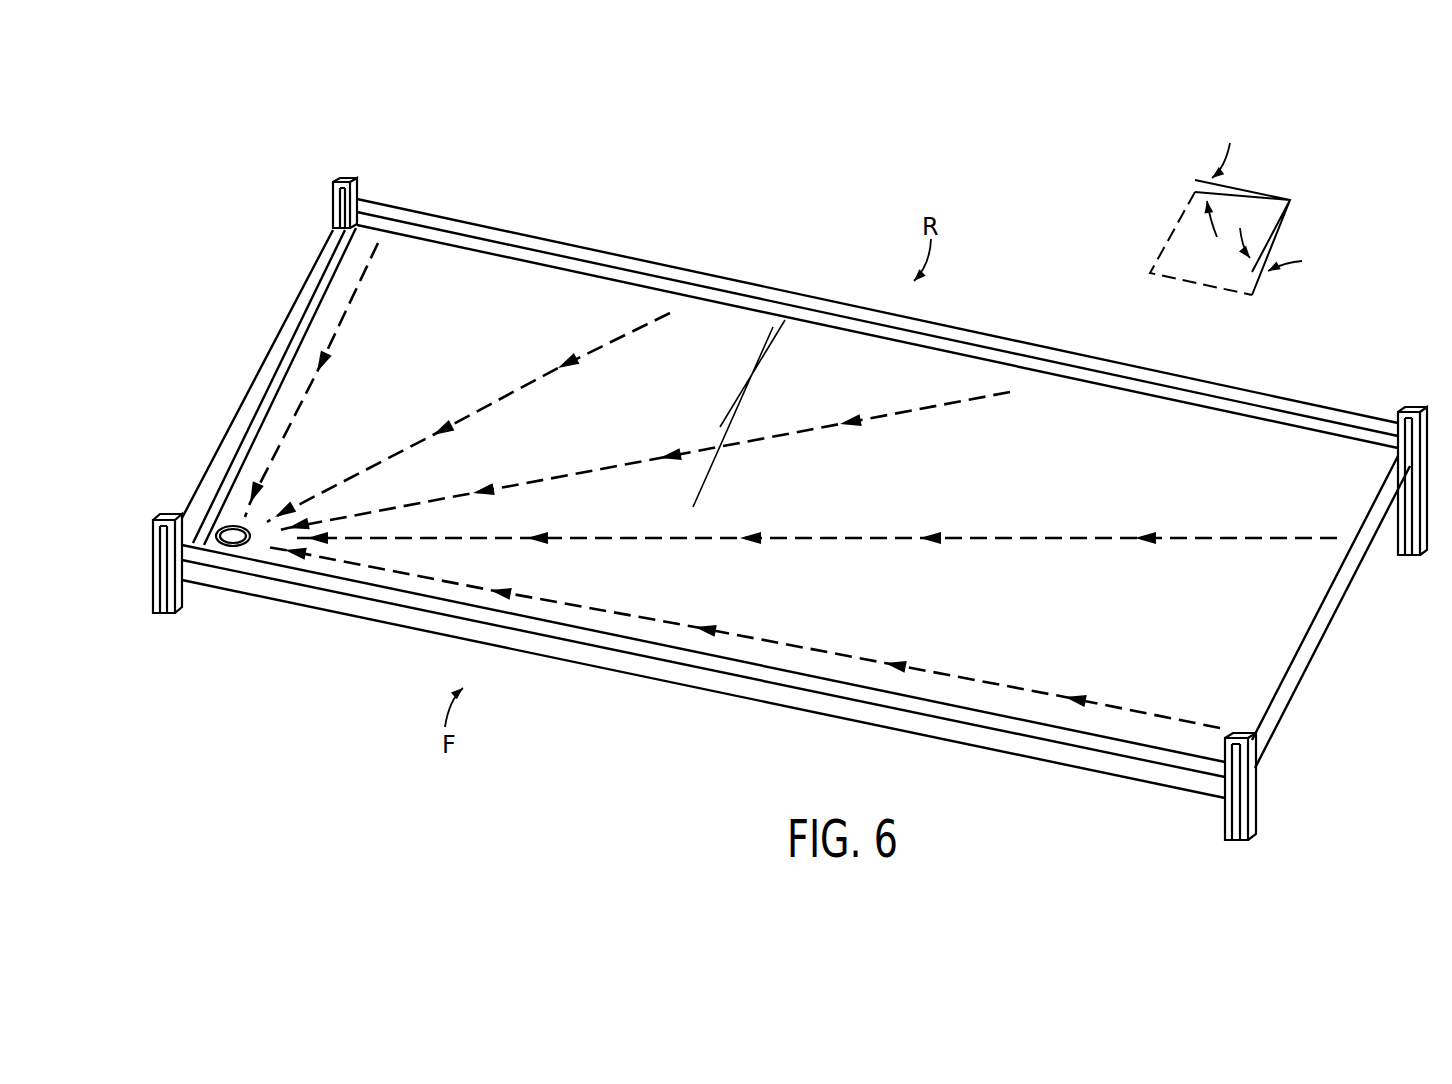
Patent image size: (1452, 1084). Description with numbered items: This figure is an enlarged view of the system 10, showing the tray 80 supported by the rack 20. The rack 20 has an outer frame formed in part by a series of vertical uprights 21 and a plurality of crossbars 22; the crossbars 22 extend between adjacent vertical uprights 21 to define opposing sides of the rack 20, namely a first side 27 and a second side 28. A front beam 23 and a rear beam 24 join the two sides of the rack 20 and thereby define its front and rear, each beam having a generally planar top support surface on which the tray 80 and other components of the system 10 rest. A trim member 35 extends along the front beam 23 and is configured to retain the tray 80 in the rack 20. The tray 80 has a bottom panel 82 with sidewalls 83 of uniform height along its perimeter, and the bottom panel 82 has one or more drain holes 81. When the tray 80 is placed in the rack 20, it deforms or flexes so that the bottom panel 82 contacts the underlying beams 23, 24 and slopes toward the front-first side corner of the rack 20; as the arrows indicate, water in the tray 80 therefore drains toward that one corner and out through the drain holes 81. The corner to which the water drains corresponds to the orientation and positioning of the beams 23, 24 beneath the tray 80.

The system 10 is at (731, 213).
The rack 20 is at (175, 322).
The vertical uprights 21 is at (333, 197).
The crossbars 22 is at (777, 462).
The front beam 23 is at (703, 692).
The rear beam 24 is at (1185, 384).
The first side 27 is at (205, 213).
The second side 28 is at (1322, 734).
The trim member 35 is at (794, 678).
The tray 80 is at (1112, 406).
The drain holes 81 is at (250, 527).
The bottom panel 82 is at (739, 322).
The sidewalls 83 is at (497, 252).